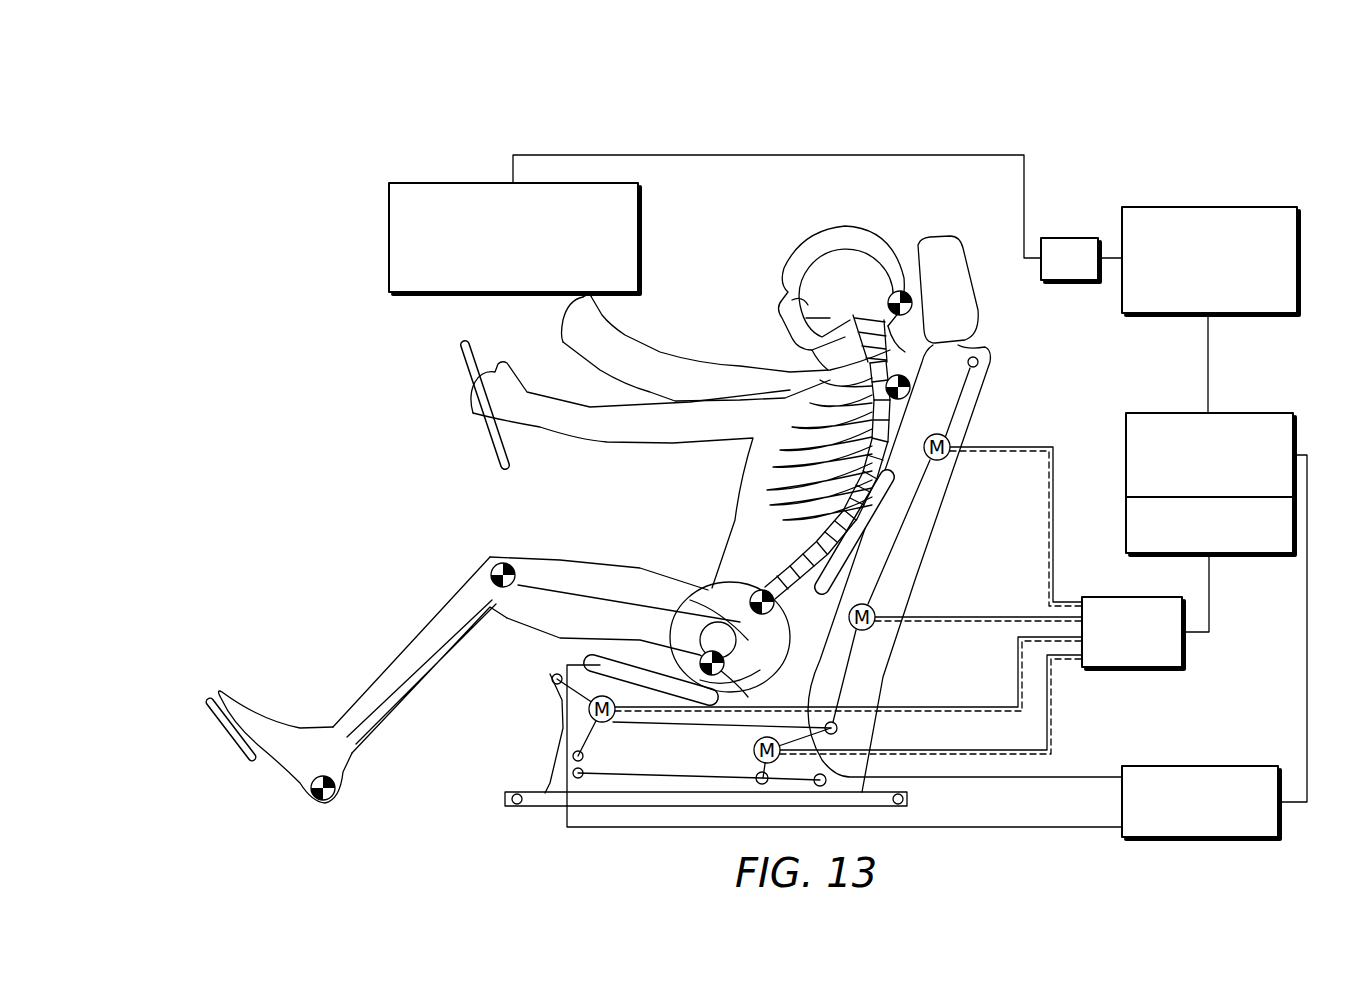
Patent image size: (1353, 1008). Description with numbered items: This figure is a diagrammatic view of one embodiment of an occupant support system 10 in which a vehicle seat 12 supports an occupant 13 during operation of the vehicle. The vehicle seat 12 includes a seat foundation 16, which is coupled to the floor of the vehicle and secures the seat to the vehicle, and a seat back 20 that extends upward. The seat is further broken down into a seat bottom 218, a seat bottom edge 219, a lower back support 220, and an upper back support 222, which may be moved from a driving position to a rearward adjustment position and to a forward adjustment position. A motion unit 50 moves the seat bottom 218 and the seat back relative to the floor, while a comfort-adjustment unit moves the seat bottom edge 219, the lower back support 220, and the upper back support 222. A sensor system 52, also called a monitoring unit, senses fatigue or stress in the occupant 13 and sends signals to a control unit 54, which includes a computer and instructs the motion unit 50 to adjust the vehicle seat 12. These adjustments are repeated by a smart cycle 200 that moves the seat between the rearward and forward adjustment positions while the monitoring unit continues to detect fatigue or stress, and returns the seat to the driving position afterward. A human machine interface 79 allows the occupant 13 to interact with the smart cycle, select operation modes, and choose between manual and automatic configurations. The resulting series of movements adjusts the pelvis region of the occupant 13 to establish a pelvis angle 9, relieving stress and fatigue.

The occupant support system 10 is at (1178, 130).
The human machine interface 79 is at (641, 238).
The smart cycle 200 is at (1185, 205).
The control unit 54 is at (1244, 556).
The motion unit 50 is at (1130, 595).
The sensor system 52 is at (1172, 766).
The seat foundation 16 is at (511, 820).
The vehicle seat 12 is at (982, 255).
The seat back 20 is at (1015, 362).
The upper back support 222 is at (950, 487).
The lower back support 220 is at (883, 604).
The seat bottom 218 is at (541, 725).
The seat bottom edge 219 is at (553, 681).
The occupant 13 is at (843, 214).
The pelvis angle 9 is at (739, 605).